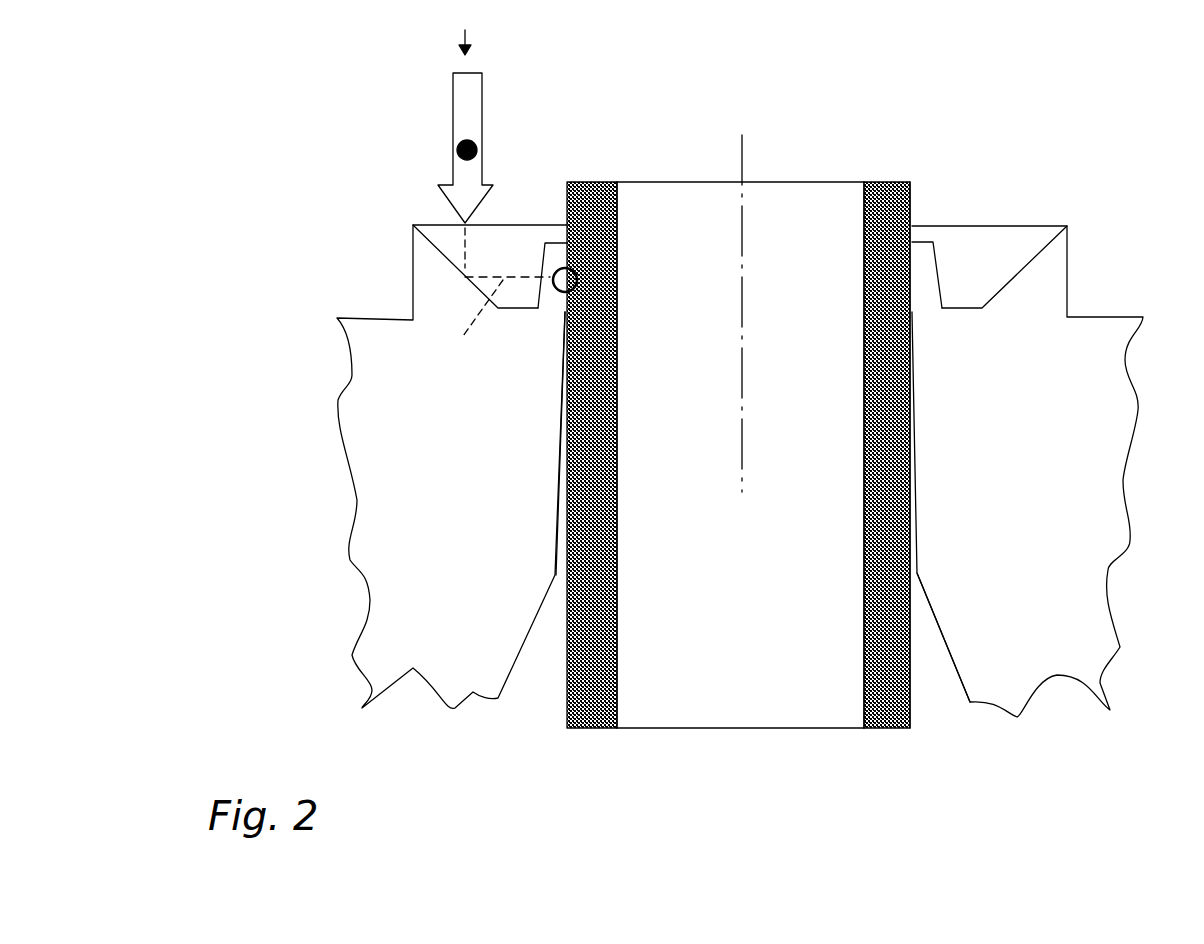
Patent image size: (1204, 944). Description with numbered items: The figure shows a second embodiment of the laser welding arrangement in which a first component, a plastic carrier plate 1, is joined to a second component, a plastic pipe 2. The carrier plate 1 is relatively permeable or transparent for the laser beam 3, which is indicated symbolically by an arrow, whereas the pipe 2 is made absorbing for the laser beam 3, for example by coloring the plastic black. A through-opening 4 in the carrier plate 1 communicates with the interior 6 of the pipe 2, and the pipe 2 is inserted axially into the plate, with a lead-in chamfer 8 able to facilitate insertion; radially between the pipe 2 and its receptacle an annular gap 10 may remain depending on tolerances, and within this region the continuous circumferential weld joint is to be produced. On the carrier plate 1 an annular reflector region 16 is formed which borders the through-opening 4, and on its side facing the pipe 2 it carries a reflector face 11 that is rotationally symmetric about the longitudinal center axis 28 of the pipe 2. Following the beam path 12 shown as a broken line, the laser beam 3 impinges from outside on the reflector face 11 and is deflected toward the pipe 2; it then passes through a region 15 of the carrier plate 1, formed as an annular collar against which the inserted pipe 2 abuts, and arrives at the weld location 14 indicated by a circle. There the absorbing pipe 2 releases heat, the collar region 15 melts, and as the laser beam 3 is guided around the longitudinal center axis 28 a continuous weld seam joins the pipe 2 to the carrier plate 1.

The carrier plate 1 is at (1128, 472).
The pipe 2 is at (622, 426).
The laser beam 3 is at (478, 117).
The through-opening 4 is at (560, 492).
The interior 6 is at (762, 580).
The lead-in chamfer 8 is at (950, 660).
The annular gap 10 is at (912, 370).
The reflector face 11 is at (470, 268).
The beam path 12 is at (469, 329).
The weld location 14 is at (578, 274).
The region 15 is at (538, 293).
The reflector region 16 is at (1060, 268).
The longitudinal center axis 28 is at (742, 265).